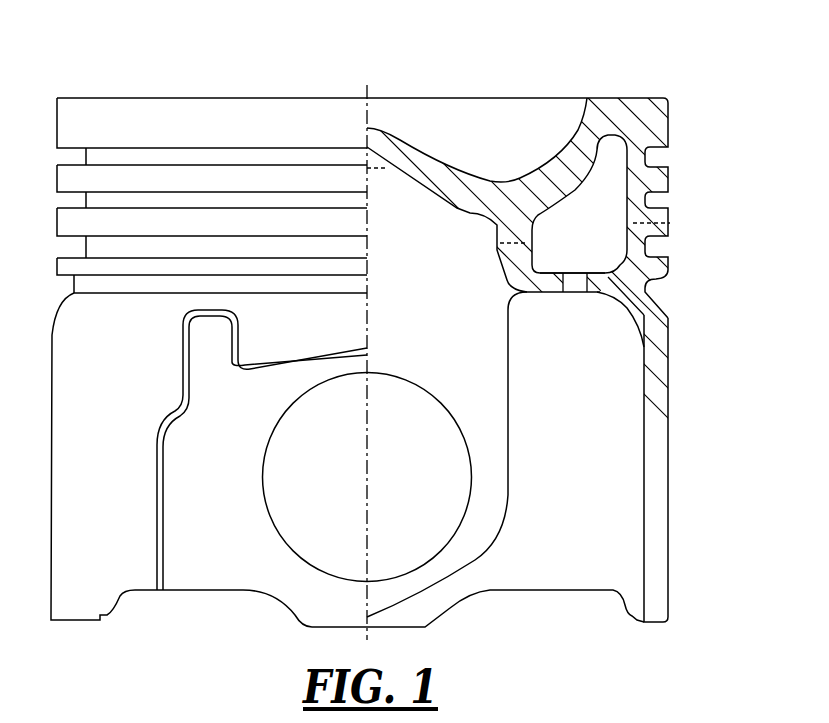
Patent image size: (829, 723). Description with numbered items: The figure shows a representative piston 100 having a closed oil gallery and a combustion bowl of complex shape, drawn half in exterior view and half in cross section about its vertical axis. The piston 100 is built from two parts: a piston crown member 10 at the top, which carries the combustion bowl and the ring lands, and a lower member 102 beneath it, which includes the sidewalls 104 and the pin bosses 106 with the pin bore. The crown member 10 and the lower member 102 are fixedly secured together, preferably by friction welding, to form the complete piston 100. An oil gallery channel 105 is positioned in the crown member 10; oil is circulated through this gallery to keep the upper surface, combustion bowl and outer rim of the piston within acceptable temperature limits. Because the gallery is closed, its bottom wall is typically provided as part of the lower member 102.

The piston 100 is at (414, 320).
The piston crown member 10 is at (653, 127).
The oil gallery channel 105 is at (603, 217).
The lower member 102 is at (394, 459).
The sidewalls 104 is at (657, 538).
The pin bosses 106 is at (286, 543).